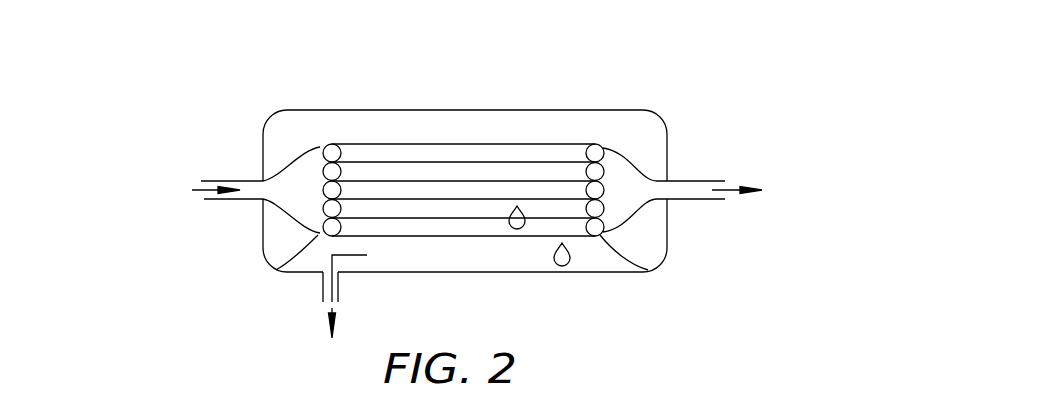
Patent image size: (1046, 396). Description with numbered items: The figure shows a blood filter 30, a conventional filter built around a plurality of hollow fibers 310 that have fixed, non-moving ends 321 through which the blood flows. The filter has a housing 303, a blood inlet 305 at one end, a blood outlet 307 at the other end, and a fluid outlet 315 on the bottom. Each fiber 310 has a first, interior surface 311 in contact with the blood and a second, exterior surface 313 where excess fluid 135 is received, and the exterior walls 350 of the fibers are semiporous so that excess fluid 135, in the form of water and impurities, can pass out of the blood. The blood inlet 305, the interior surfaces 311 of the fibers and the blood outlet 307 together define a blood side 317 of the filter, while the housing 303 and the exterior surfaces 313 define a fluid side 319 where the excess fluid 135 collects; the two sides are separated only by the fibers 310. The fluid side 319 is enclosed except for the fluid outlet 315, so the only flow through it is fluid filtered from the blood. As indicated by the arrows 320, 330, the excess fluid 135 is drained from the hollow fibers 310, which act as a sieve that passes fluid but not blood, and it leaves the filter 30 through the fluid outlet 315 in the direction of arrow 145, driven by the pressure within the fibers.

The blood filter 30 is at (693, 118).
The housing 303 is at (507, 110).
The blood inlet 305 is at (218, 180).
The blood outlet 307 is at (703, 200).
The hollow fibers 310 is at (560, 127).
The interior surface 311 is at (324, 190).
The exterior surface 313 is at (443, 162).
The fluid outlet 315 is at (322, 290).
The blood side 317 is at (622, 183).
The fluid side 319 is at (345, 120).
The arrow 320 is at (205, 200).
The fixed ends 321 is at (280, 262).
The arrow 330 is at (732, 192).
The exterior walls 350 is at (390, 219).
The excess fluid 135 is at (516, 226).
The arrow 145 is at (353, 258).